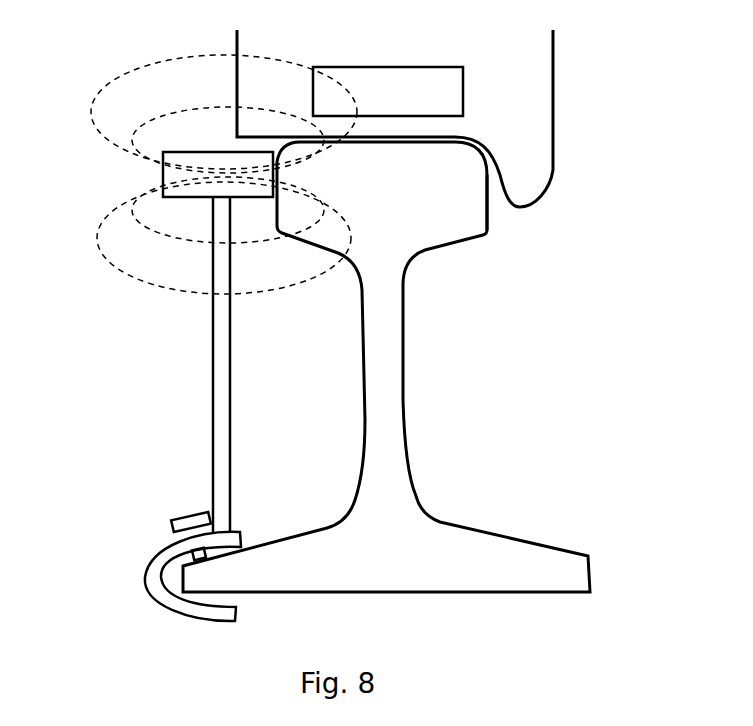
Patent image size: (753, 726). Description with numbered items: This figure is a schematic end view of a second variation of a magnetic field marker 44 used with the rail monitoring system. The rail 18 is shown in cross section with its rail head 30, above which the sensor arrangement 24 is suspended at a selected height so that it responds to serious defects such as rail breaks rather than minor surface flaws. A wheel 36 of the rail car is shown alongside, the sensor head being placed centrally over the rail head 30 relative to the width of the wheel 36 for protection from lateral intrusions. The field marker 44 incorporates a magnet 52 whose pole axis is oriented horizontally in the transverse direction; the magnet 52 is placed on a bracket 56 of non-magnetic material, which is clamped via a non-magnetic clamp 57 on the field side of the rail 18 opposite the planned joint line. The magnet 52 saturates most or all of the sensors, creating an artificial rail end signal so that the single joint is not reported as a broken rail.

The rail 18 is at (506, 405).
The sensor arrangement 24 is at (400, 88).
The rail head 30 is at (490, 215).
The wheel 36 is at (528, 110).
The field marker 44 is at (142, 335).
The magnet 52 is at (200, 168).
The bracket 56 is at (213, 417).
The clamp 57 is at (143, 568).